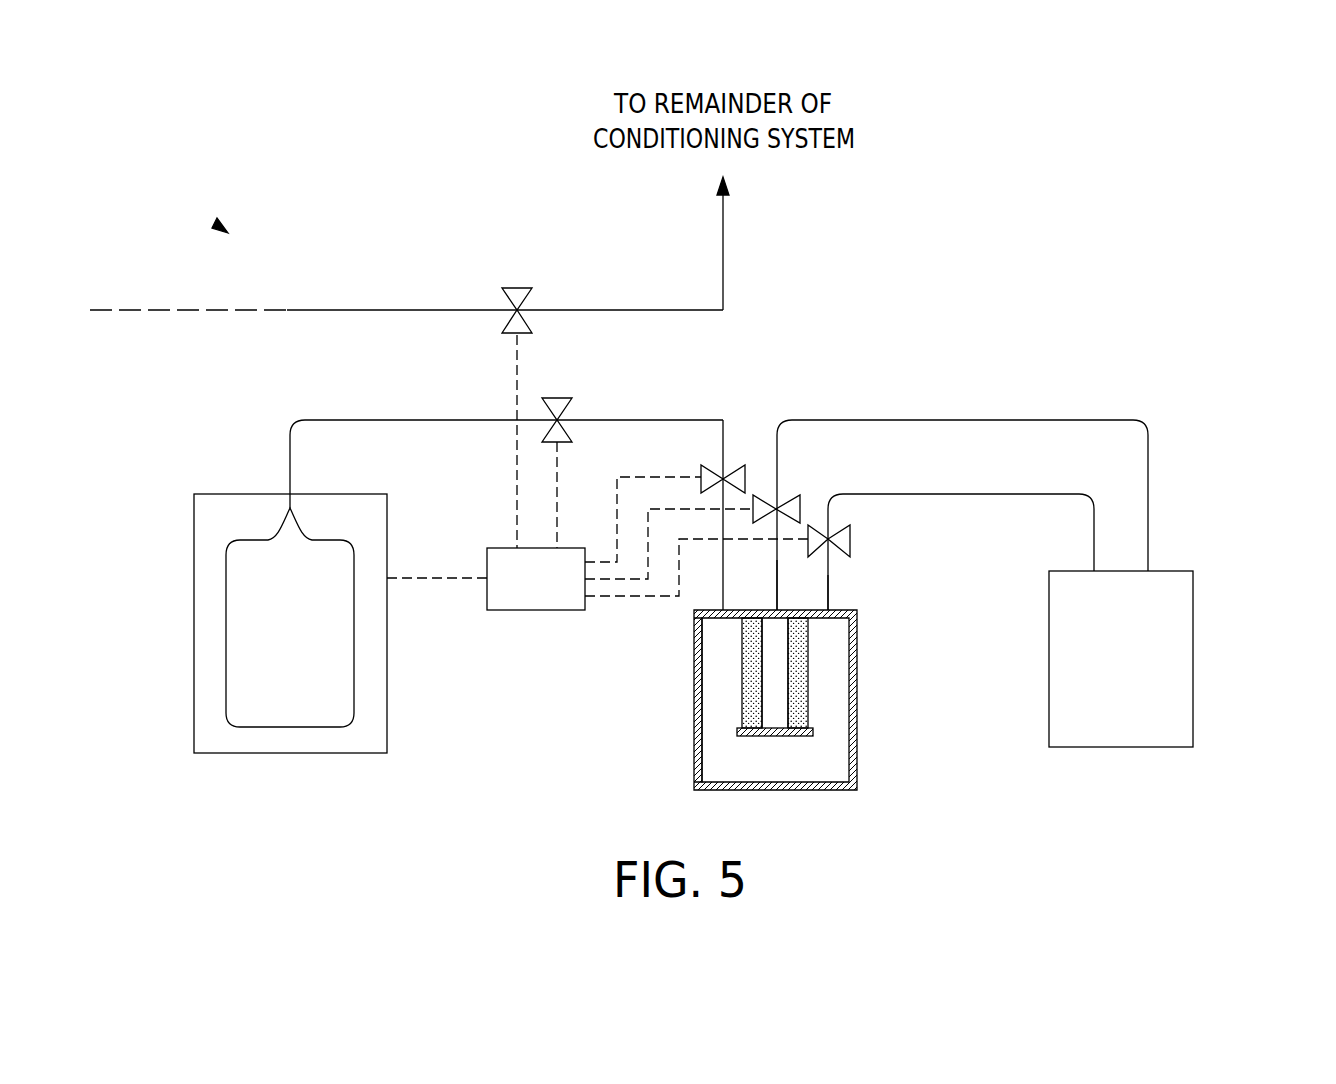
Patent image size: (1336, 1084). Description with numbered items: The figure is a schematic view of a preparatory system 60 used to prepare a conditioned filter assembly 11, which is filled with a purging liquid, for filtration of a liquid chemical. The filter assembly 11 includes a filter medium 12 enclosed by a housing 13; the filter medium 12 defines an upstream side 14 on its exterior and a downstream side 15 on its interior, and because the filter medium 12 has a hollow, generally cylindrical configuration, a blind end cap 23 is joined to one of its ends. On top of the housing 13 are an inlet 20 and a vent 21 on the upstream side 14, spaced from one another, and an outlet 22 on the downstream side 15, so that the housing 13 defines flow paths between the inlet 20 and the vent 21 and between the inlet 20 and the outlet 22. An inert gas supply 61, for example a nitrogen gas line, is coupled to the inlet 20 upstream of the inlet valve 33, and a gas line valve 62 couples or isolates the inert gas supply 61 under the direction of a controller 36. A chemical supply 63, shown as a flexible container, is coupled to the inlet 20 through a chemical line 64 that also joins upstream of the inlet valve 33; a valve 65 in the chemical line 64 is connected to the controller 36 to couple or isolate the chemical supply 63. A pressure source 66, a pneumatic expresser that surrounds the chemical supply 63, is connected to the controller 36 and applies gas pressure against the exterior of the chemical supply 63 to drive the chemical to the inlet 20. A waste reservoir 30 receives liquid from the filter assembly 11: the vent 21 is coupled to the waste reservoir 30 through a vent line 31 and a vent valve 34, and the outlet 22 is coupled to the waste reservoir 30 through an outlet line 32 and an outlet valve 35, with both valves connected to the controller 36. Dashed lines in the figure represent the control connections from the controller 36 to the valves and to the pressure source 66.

The filter assembly 11 is at (857, 745).
The filter medium 12 is at (810, 690).
The housing 13 is at (695, 735).
The upstream side 14 is at (722, 660).
The downstream side 15 is at (777, 645).
The inlet 20 is at (720, 600).
The vent 21 is at (830, 590).
The outlet 22 is at (773, 600).
The blind end cap 23 is at (780, 737).
The waste reservoir 30 is at (1210, 640).
The vent line 31 is at (993, 497).
The outlet line 32 is at (943, 420).
The inlet valve 33 is at (710, 468).
The vent valve 34 is at (850, 540).
The outlet valve 35 is at (785, 495).
The controller 36 is at (528, 612).
The preparatory system 60 is at (222, 229).
The inert gas supply 61 is at (377, 310).
The gas line valve 62 is at (520, 288).
The chemical supply 63 is at (258, 682).
The chemical line 64 is at (407, 420).
The valve 65 is at (562, 398).
The pressure source 66 is at (387, 686).